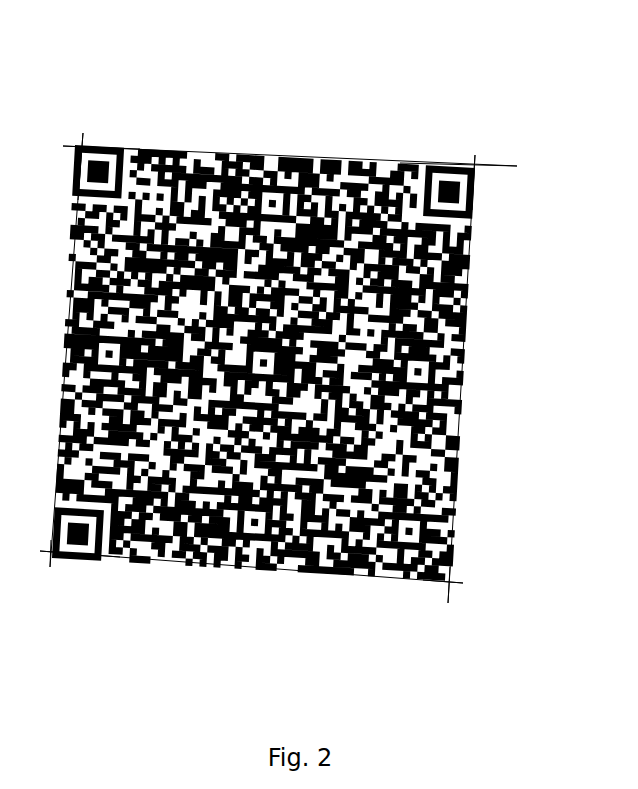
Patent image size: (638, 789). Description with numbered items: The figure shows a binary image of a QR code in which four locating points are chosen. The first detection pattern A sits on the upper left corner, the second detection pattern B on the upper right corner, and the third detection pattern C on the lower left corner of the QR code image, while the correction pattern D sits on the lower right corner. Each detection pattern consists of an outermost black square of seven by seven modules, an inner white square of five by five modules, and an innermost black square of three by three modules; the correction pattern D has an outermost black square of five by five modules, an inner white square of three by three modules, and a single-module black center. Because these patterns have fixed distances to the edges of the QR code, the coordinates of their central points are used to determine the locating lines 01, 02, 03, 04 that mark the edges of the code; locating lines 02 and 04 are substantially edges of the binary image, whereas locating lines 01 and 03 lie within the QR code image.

The first detection pattern A is at (123, 114).
The second detection pattern B is at (488, 124).
The third detection pattern C is at (110, 597).
The correction pattern D is at (515, 379).
The locating line 01 is at (458, 175).
The locating line 02 is at (443, 598).
The locating line 03 is at (68, 550).
The locating line 04 is at (101, 154).